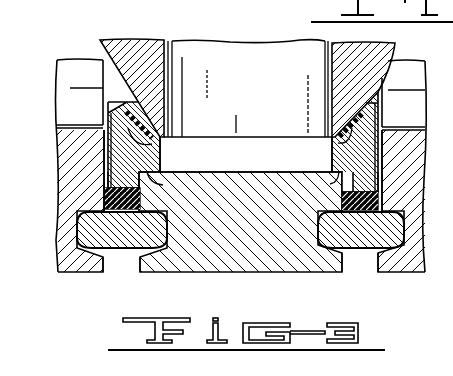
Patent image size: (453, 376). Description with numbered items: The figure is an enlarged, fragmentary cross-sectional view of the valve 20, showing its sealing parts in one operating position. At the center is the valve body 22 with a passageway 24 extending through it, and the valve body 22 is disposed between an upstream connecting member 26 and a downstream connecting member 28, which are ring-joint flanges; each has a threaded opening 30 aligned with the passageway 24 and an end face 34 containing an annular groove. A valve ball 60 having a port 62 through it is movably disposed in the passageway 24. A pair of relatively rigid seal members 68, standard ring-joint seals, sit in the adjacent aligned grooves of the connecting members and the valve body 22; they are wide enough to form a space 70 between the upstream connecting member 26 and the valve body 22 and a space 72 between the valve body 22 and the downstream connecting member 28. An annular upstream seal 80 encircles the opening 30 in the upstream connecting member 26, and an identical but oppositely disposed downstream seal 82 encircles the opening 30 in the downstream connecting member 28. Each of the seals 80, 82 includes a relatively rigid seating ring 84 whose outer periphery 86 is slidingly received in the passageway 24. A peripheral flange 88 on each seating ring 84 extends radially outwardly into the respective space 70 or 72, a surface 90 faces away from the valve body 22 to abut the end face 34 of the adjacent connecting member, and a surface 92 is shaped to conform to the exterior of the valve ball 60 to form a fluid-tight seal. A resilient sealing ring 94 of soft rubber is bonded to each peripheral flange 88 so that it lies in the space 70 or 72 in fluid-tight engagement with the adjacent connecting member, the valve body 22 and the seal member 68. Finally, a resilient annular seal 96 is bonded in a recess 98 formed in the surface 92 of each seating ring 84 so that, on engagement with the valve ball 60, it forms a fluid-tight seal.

The valve 20 is at (80, 34).
The valve body 22 is at (252, 258).
The passageway 24 is at (236, 172).
The upstream connecting member 26 is at (80, 260).
The downstream connecting member 28 is at (418, 190).
The threaded opening 30 is at (68, 68).
The end face 34 is at (108, 118).
The valve ball 60 is at (127, 43).
The port 62 is at (255, 70).
The seal member 68 is at (129, 236).
The space 70 is at (118, 265).
The space 72 is at (359, 268).
The upstream seal 80 is at (128, 155).
The downstream seal 82 is at (373, 155).
The seating ring 84 is at (160, 157).
The outer periphery 86 is at (150, 173).
The peripheral flange 88 is at (117, 180).
The surface 90 is at (107, 147).
The surface 92 is at (165, 135).
The resilient sealing ring 94 is at (143, 198).
The resilient annular seal 96 is at (141, 108).
The recess 98 is at (160, 145).